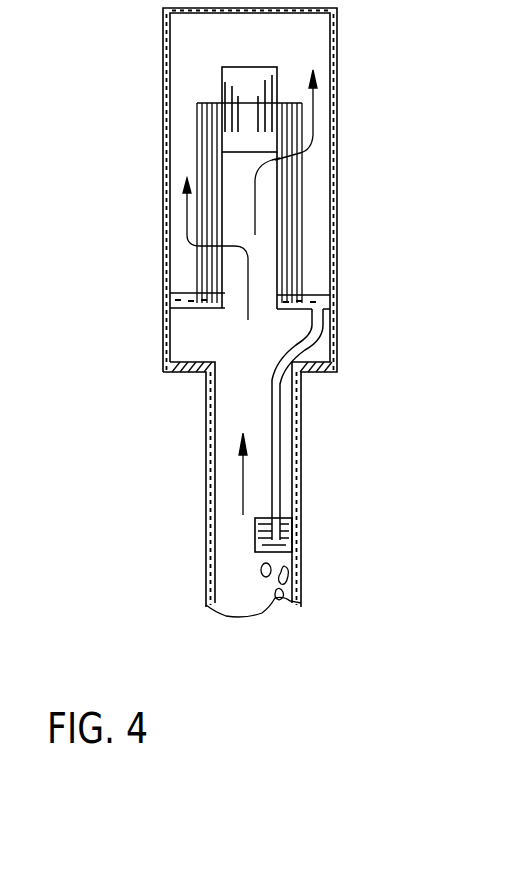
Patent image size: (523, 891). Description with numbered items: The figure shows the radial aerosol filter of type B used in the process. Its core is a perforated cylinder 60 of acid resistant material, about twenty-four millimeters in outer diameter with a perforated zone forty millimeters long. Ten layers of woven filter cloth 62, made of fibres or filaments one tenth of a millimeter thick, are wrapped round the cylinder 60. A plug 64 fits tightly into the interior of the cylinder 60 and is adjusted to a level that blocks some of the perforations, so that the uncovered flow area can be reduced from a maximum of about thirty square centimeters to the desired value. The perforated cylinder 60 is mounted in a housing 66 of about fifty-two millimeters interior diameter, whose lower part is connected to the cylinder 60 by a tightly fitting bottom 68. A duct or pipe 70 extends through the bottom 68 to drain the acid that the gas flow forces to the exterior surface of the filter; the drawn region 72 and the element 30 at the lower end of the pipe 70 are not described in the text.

The aerator / gas diffuser 30 is at (300, 529).
The perforated cylinder 60 is at (276, 188).
The woven filter cloth 62 is at (293, 230).
The plug 64 is at (262, 78).
The housing 66 is at (338, 278).
The bottom 68 is at (337, 307).
The duct or pipe 70 is at (272, 448).
The annular passage 72 is at (205, 280).